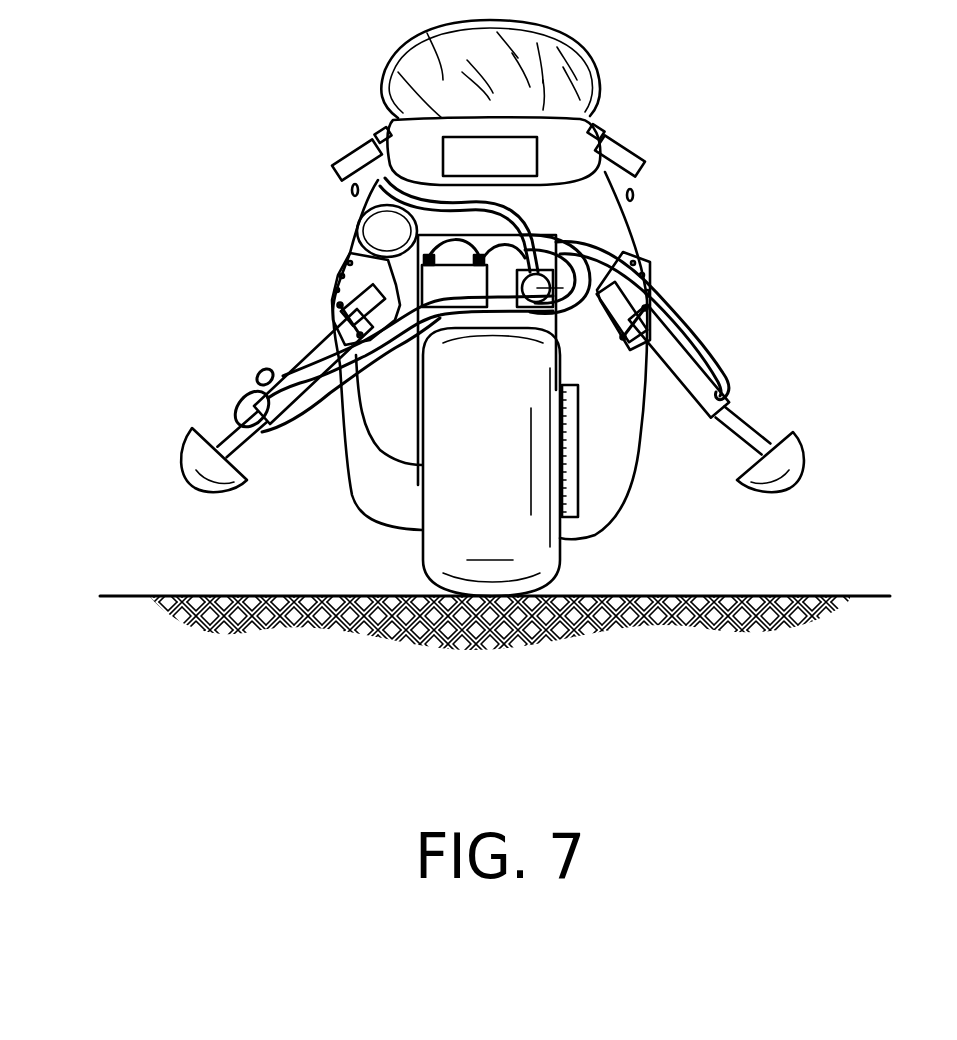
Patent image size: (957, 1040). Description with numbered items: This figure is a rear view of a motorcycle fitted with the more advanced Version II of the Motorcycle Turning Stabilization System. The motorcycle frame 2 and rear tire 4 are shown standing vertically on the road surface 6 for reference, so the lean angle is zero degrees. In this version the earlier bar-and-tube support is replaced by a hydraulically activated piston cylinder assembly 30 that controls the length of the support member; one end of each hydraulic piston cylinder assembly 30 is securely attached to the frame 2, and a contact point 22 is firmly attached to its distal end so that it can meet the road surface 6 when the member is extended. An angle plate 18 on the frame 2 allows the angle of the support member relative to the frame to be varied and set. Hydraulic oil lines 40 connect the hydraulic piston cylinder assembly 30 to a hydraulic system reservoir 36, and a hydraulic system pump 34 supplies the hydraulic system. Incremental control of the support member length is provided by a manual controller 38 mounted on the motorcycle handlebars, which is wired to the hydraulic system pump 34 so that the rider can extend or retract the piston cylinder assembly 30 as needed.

The motorcycle frame 2 is at (600, 210).
The rear tire 4 is at (556, 568).
The road surface 6 is at (112, 585).
The angle plate 18 is at (342, 270).
The contact point 22 is at (180, 446).
The hydraulic piston cylinder assembly 30 is at (333, 338).
The hydraulic system pump 34 is at (570, 268).
The hydraulic system reservoir 36 is at (643, 267).
The manual controller 38 is at (377, 132).
The hydraulic oil lines 40 is at (308, 413).